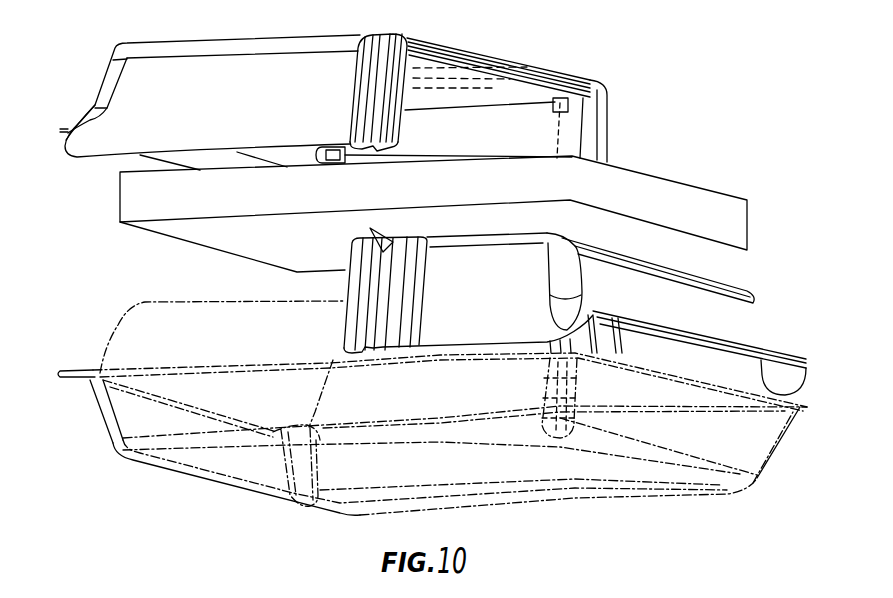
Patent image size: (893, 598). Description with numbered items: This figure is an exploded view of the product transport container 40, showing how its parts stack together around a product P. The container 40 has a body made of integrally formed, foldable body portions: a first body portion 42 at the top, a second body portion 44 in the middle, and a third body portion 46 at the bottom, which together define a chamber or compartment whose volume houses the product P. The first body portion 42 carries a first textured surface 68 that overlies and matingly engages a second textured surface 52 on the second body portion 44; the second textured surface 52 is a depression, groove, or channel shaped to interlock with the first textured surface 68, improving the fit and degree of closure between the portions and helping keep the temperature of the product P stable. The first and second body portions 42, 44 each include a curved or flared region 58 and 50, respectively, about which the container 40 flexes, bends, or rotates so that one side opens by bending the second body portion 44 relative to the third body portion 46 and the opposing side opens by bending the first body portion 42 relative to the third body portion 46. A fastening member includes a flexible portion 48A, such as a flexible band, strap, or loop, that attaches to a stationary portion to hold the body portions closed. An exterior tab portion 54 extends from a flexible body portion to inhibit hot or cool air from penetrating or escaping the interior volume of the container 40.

The product transport container 40 is at (648, 105).
The first body portion 42 is at (160, 108).
The second body portion 44 is at (727, 298).
The third body portion 46 is at (641, 487).
The flexible portion 48A is at (320, 142).
The flared region 50 is at (787, 352).
The second textured surface 52 is at (366, 366).
The tab portion 54 is at (388, 243).
The flared region 58 is at (66, 128).
The first textured surface 68 is at (374, 163).
The product P is at (647, 192).